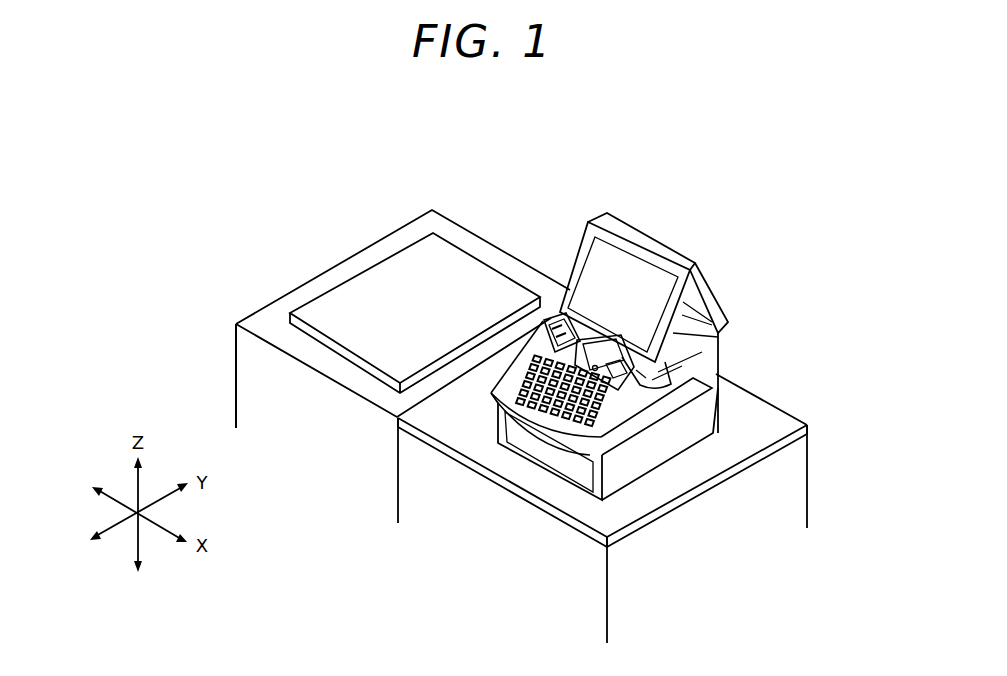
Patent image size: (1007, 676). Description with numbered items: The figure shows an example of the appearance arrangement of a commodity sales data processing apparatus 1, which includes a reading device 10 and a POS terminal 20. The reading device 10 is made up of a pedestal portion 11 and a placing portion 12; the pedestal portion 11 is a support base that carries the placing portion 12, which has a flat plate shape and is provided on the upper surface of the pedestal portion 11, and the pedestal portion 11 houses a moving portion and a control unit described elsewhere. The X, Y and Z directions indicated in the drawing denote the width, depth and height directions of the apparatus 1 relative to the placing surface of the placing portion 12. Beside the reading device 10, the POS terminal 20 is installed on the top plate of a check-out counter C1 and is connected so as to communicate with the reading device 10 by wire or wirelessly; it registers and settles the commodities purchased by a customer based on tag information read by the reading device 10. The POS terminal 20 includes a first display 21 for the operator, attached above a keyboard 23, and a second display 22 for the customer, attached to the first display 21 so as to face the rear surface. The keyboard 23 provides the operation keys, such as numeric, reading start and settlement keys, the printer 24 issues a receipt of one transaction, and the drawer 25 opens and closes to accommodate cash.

The commodity sales data processing apparatus 1 is at (691, 123).
The reading device 10 is at (384, 203).
The pedestal portion 11 is at (250, 371).
The placing portion 12 is at (437, 260).
The POS terminal 20 is at (721, 272).
The first display 21 is at (595, 262).
The second display 22 is at (668, 262).
The keyboard 23 is at (577, 423).
The printer 24 is at (548, 333).
The drawer 25 is at (520, 440).
The check-out counter C1 is at (808, 489).